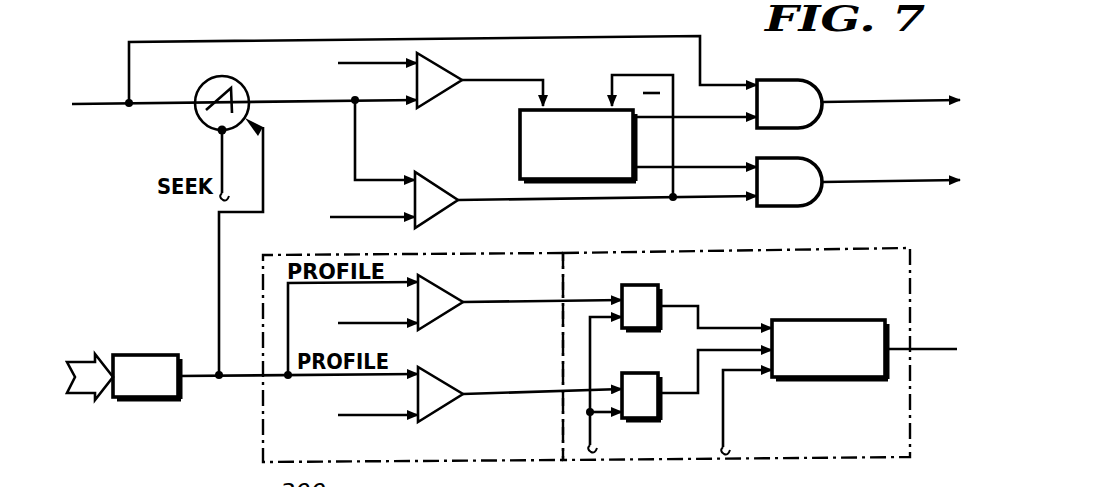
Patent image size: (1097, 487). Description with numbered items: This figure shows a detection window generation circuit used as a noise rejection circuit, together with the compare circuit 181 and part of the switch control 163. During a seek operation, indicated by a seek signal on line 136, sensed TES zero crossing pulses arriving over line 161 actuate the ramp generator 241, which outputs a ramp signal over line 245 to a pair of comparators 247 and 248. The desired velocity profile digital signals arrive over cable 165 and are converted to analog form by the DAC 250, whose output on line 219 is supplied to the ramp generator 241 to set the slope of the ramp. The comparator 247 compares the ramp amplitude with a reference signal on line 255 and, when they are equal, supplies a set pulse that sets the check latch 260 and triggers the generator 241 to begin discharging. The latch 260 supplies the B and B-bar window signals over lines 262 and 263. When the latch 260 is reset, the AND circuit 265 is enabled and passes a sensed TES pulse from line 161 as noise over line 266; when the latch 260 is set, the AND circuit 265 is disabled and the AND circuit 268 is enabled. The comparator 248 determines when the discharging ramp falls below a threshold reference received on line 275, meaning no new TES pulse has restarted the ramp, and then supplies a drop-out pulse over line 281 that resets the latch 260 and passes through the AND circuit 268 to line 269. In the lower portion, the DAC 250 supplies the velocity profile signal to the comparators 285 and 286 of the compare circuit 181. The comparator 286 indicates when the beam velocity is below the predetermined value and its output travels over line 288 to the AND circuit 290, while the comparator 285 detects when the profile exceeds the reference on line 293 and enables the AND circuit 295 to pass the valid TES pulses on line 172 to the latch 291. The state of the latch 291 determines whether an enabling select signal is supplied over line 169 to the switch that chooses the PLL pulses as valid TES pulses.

The line 161 is at (106, 82).
The ramp generator 241 is at (240, 80).
The line 136 is at (222, 148).
The line 219 is at (217, 272).
The comparator 247 is at (438, 72).
The line 255 is at (372, 75).
The line 245 is at (382, 102).
The comparator 248 is at (436, 190).
The line 275 is at (364, 226).
The line 281 is at (516, 200).
The check latch 260 is at (520, 128).
The line 263 is at (727, 100).
The line 262 is at (727, 145).
The AND circuit 265 is at (804, 80).
The line 266 is at (880, 106).
The AND circuit 268 is at (805, 158).
The line 269 is at (888, 188).
The switch control 163 is at (796, 247).
The compare circuit 181 is at (546, 250).
The DAC 250 is at (165, 335).
The cable 165 is at (80, 398).
The line 293 is at (352, 326).
The comparator 285 is at (450, 282).
The comparator 286 is at (450, 370).
The line 288 is at (538, 392).
The AND circuit 295 is at (636, 285).
The AND circuit 290 is at (630, 373).
The line 172 is at (592, 428).
The latch 291 is at (834, 378).
The line 169 is at (955, 328).